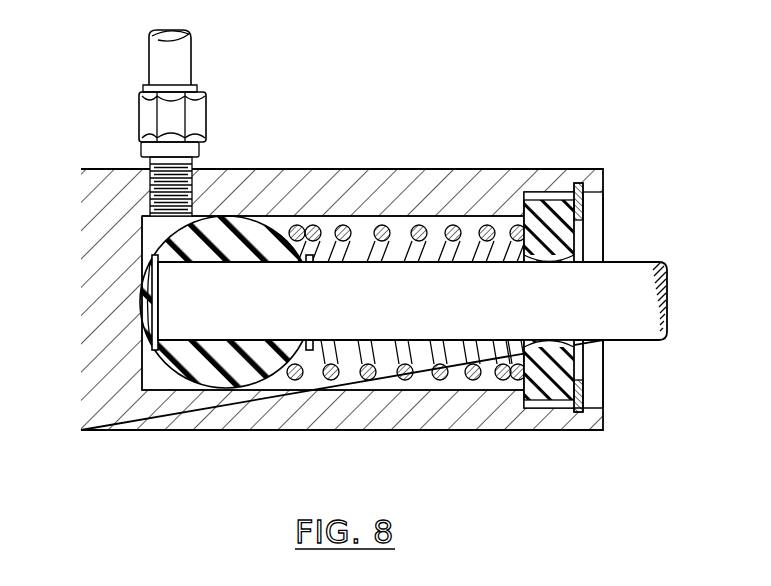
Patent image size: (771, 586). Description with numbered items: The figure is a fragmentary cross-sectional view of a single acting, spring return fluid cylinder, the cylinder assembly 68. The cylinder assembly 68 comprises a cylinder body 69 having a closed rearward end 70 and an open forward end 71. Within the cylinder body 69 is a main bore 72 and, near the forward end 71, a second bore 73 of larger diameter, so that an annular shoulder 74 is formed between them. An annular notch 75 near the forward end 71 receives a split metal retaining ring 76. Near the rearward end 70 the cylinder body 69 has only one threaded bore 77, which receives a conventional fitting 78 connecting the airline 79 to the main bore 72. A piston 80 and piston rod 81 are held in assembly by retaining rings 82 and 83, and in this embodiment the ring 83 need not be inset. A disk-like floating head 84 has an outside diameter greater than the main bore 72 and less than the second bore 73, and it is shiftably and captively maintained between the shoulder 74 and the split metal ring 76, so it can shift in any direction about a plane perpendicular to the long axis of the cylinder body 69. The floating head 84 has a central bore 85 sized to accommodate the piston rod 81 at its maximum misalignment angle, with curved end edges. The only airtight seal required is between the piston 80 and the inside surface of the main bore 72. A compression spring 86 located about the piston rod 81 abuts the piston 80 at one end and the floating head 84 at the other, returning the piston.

The cylinder assembly 68 is at (356, 170).
The cylinder body 69 is at (427, 178).
The closed rearward end 70 is at (81, 211).
The open forward end 71 is at (593, 233).
The main bore 72 is at (362, 213).
The second bore 73 is at (593, 196).
The annular shoulder 74 is at (524, 197).
The annular notch 75 is at (579, 182).
The split metal retaining ring 76 is at (595, 390).
The threaded bore 77 is at (191, 184).
The fitting 78 is at (195, 117).
The airline 79 is at (183, 57).
The piston 80 is at (245, 380).
The piston rod 81 is at (412, 301).
The retaining ring 82 is at (160, 290).
The retaining ring 83 is at (315, 302).
The floating head 84 is at (553, 395).
The central bore 85 is at (548, 258).
The compression spring 86 is at (438, 380).